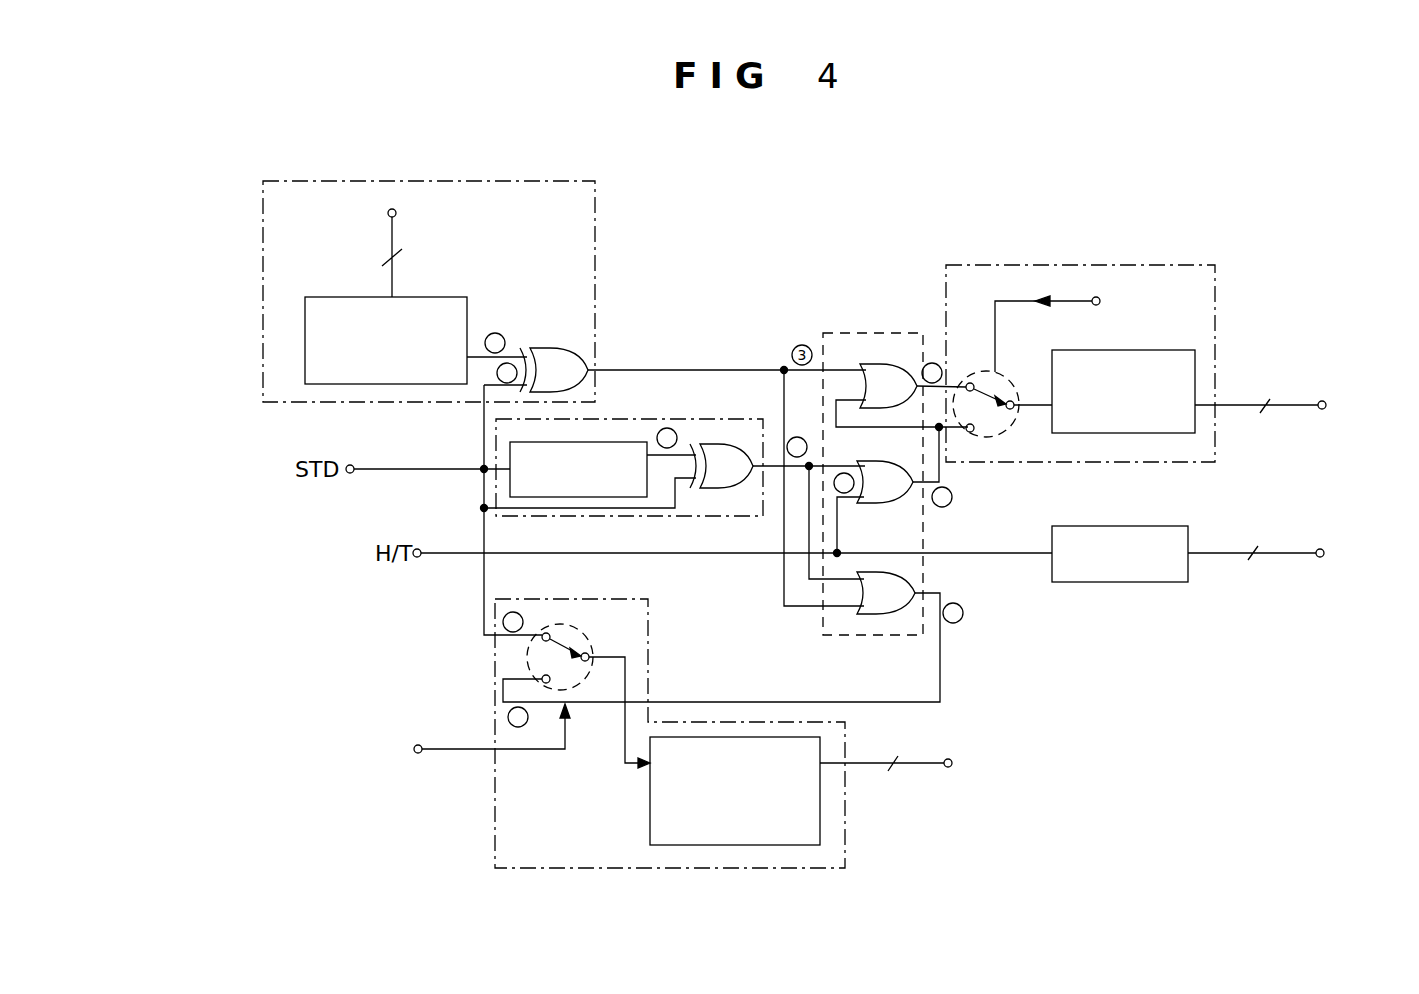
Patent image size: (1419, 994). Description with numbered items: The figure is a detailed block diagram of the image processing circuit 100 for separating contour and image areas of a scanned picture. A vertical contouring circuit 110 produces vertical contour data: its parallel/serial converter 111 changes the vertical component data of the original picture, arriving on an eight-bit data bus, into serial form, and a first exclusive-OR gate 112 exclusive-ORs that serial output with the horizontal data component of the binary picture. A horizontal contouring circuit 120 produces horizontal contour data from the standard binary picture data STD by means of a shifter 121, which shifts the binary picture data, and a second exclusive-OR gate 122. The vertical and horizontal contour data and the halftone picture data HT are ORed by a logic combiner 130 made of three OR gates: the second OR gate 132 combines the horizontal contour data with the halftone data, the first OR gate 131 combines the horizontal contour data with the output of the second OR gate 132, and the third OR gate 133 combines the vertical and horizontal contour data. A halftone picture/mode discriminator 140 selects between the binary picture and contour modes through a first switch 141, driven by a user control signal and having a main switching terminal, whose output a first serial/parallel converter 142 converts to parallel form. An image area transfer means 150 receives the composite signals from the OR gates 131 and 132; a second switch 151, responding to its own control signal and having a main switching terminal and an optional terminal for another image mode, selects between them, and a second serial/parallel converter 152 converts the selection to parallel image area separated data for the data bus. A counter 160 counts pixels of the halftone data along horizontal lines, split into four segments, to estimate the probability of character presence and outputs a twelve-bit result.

The data processing circuit 100 is at (738, 286).
The vertical contouring circuit 110 is at (263, 294).
The parallel/serial converter 111 is at (455, 296).
The first exclusive-OR gate 112 is at (551, 346).
The horizontal contouring circuit 120 is at (486, 500).
The shifter 121 is at (622, 442).
The second exclusive-OR gate 122 is at (720, 445).
The logic combiner 130 is at (845, 332).
The first OR gate 131 is at (890, 364).
The second OR gate 132 is at (888, 504).
The third OR gate 133 is at (893, 615).
The halftone picture/mode discriminator 140 is at (580, 868).
The first switch 141 is at (527, 654).
The first serial/parallel converter 142 is at (700, 845).
The image area transfer means 150 is at (1215, 298).
The second switch 151 is at (1030, 358).
The second serial/parallel converter 152 is at (1126, 433).
The counter 160 is at (1145, 582).